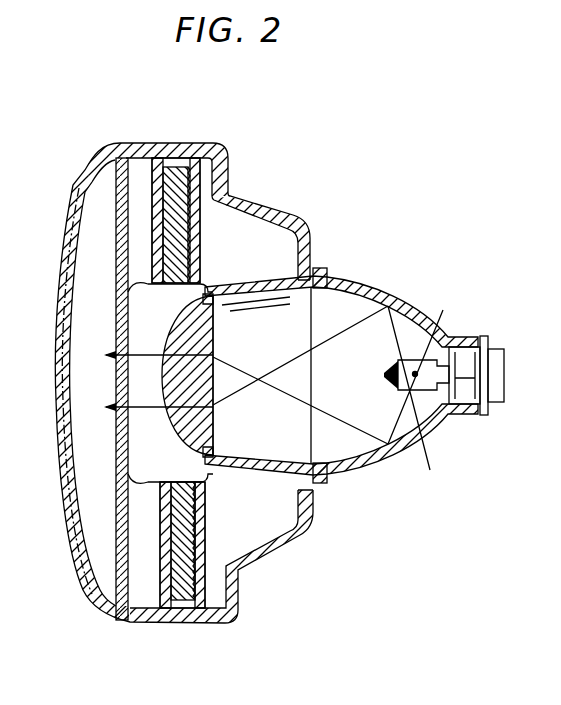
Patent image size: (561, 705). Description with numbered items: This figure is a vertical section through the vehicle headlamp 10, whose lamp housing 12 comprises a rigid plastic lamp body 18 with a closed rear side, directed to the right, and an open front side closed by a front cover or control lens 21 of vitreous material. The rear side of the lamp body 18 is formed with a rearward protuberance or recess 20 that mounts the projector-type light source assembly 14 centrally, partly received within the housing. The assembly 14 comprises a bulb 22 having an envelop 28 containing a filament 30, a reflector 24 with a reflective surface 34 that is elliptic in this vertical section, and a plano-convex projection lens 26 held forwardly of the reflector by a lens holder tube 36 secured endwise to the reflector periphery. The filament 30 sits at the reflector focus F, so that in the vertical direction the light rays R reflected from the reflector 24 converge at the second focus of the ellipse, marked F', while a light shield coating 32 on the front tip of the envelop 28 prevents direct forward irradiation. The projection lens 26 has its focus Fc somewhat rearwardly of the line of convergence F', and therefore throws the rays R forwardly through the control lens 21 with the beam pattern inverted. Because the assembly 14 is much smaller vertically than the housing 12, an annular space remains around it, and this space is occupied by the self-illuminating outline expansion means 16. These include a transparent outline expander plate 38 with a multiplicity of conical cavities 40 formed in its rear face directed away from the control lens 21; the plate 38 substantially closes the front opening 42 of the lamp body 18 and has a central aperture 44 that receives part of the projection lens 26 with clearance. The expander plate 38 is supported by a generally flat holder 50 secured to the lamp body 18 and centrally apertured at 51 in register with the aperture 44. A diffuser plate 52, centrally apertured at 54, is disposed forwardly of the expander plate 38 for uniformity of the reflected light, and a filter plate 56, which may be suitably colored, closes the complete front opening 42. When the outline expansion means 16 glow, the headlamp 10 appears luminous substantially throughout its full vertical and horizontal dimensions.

The vehicle headlamp 10 is at (403, 125).
The lamp housing 12 is at (148, 146).
The projector-type light source assembly 14 is at (453, 336).
The outline expansion means 16 is at (136, 616).
The lamp body 18 is at (172, 158).
The rearward protuberance or recess 20 is at (284, 540).
The front cover or control lens 21 is at (66, 230).
The bulb 22 is at (415, 360).
The reflector 24 is at (378, 291).
The plano-convex projection lens 26 is at (178, 336).
The envelop 28 is at (408, 392).
The filament 30 is at (416, 374).
The light shield coating 32 is at (396, 380).
The reflective surface 34 is at (330, 286).
The lens holder tube 36 is at (279, 281).
The outline expander plate 38 is at (152, 198).
The conical cavities 40 is at (190, 247).
The front opening 42 is at (112, 163).
The central aperture 44 is at (128, 470).
The holder 50 is at (221, 206).
The aperture 51 is at (200, 292).
The diffuser plate 52 is at (150, 168).
The aperture 54 is at (122, 277).
The filter plate 56 is at (123, 387).
The projection lens focus Fc is at (278, 380).
The second focus of the ellipse F' is at (258, 408).
The reflector focus F is at (451, 433).
The light rays R is at (338, 325).